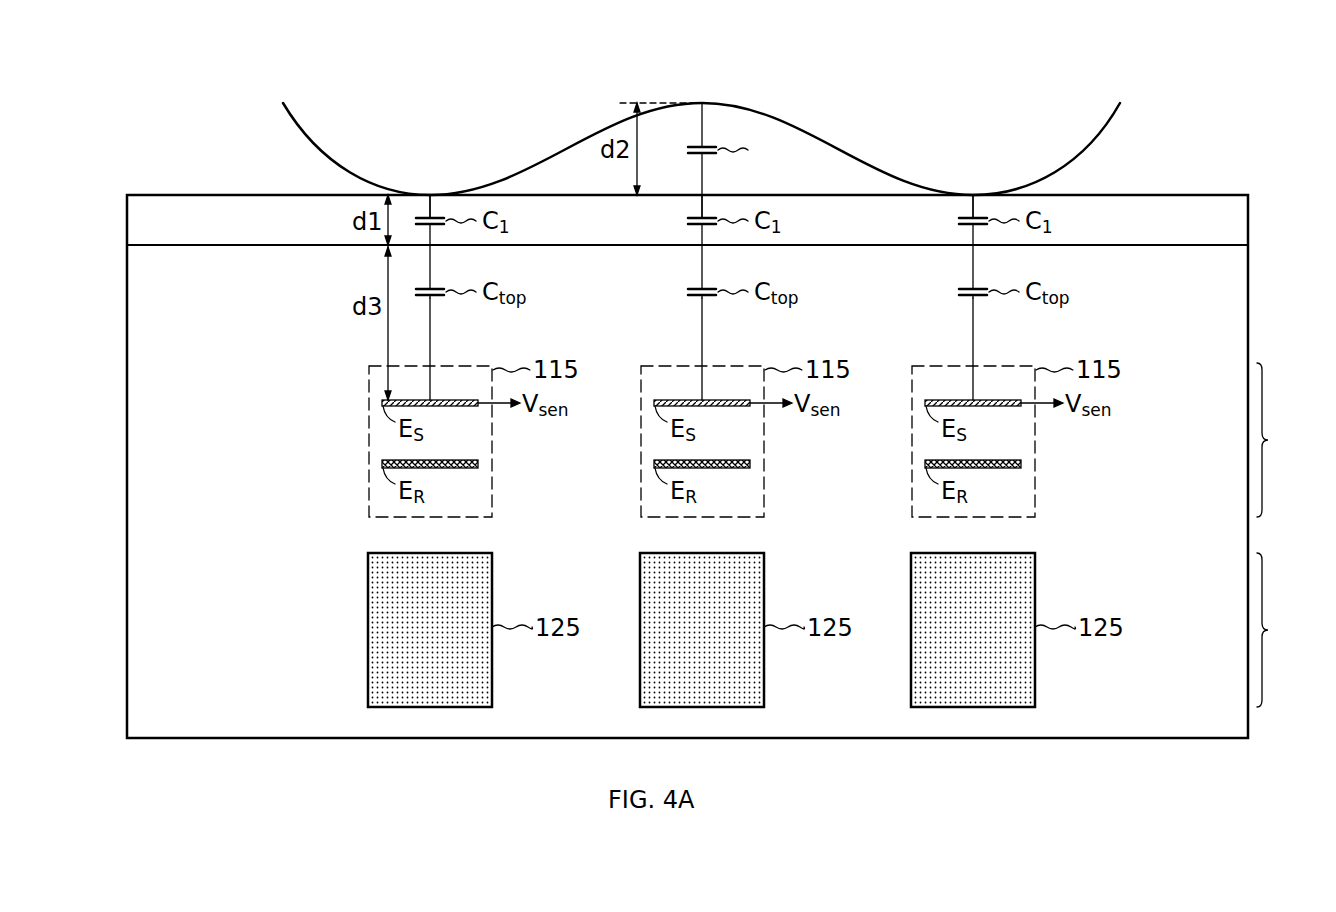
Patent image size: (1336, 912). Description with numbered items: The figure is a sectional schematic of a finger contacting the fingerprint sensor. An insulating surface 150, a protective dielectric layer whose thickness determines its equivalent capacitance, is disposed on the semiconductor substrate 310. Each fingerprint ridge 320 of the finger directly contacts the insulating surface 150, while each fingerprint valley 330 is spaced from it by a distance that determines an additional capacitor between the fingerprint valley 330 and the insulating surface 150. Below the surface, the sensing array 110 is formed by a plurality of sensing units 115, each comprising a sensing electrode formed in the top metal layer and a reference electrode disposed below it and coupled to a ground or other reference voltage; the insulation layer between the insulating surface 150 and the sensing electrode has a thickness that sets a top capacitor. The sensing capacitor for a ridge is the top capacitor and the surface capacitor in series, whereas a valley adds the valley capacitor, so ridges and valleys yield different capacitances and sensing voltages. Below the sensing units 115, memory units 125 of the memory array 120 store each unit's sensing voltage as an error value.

The sensing array 110 is at (1288, 440).
The sensing unit 115 is at (745, 407).
The memory array 120 is at (1288, 630).
The memory unit 125 is at (746, 630).
The insulating surface 150 is at (127, 222).
The semiconductor substrate 310 is at (127, 458).
The fingerprint ridge 320 is at (430, 192).
The fingerprint valley 330 is at (702, 100).